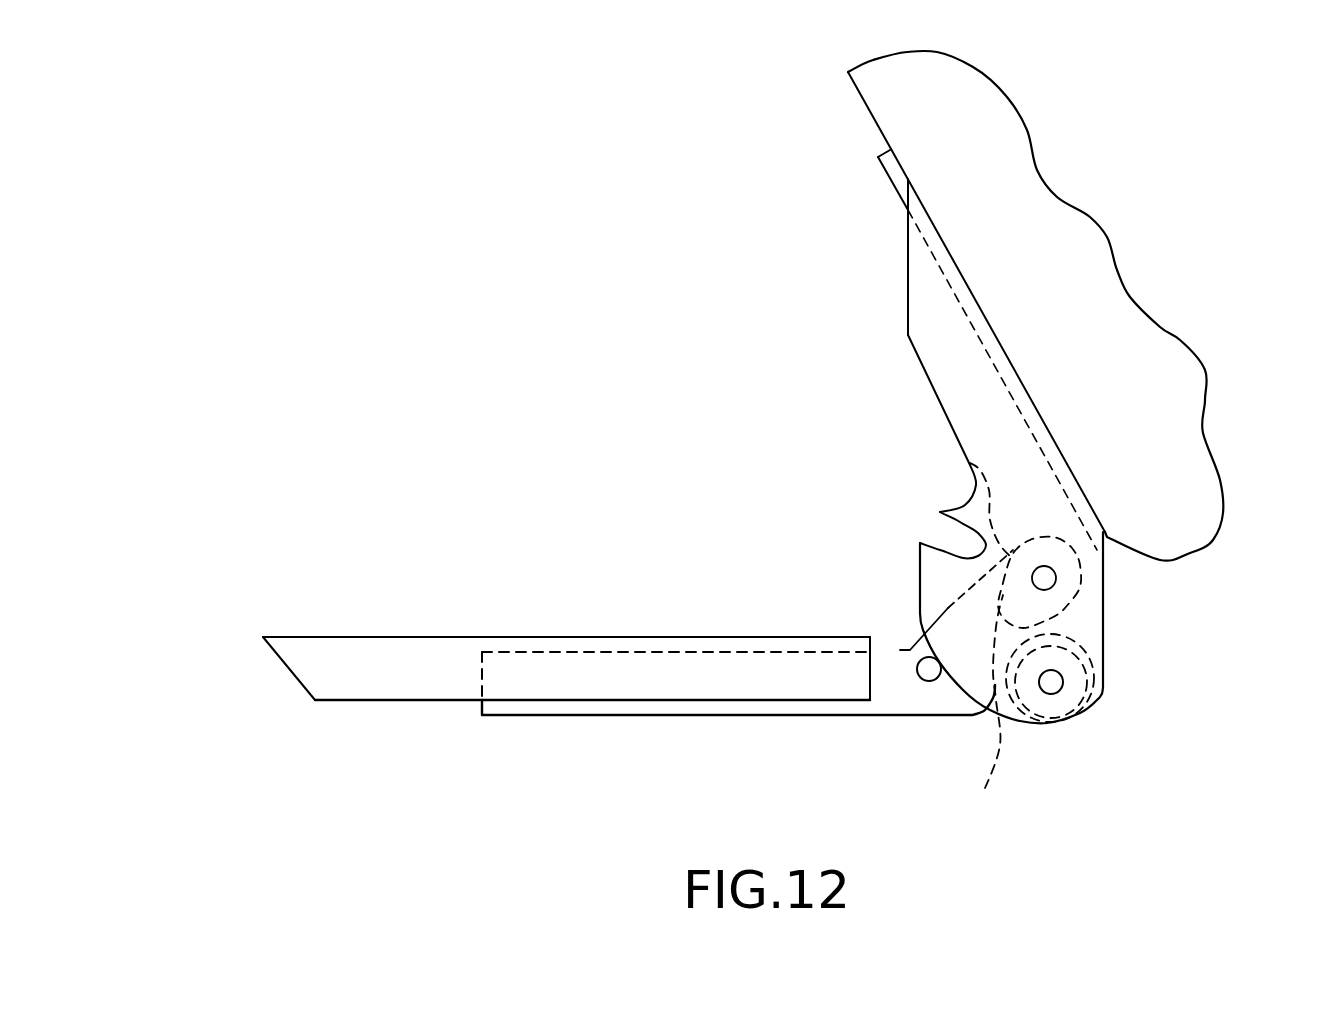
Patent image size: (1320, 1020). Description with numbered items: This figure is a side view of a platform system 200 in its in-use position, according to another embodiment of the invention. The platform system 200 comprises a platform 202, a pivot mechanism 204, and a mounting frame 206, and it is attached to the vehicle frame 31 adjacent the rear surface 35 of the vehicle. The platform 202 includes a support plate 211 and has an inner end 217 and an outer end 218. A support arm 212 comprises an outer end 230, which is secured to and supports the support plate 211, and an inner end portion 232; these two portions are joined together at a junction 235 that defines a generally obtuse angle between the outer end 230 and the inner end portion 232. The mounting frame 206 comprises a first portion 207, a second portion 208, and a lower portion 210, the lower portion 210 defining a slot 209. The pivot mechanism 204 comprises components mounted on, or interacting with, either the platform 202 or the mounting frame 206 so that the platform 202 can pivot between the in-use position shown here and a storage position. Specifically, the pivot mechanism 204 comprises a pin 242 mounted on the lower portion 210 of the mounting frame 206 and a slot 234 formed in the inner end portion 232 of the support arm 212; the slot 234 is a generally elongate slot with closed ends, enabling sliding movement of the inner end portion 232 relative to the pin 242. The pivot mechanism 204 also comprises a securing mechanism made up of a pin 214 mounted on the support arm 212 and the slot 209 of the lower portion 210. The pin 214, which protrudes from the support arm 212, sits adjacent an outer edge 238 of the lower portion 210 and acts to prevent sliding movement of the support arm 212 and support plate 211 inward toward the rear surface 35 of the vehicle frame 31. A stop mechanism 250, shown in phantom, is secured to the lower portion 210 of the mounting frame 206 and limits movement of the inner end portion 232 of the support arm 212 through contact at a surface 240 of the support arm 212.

The platform system 200 is at (465, 302).
The platform 202 is at (425, 620).
The pivot mechanism 204 is at (1122, 622).
The mounting frame 206 is at (908, 313).
The first portion 207 is at (883, 173).
The second portion 208 is at (953, 385).
The slot 209 is at (920, 542).
The lower portion 210 is at (920, 582).
The support plate 211 is at (383, 688).
The support arm 212 is at (545, 717).
The pin 214 is at (920, 685).
The inner end 217 is at (870, 637).
The outer end 218 is at (290, 673).
The outer end 230 is at (652, 690).
The inner end portion 232 is at (970, 463).
The slot 234 is at (983, 709).
The junction 235 is at (900, 648).
The outer edge 238 is at (950, 580).
The surface 240 is at (1103, 652).
The pin 242 is at (1053, 540).
The stop mechanism 250 is at (1103, 700).
The vehicle frame 31 is at (1087, 223).
The rear surface 35 is at (955, 263).